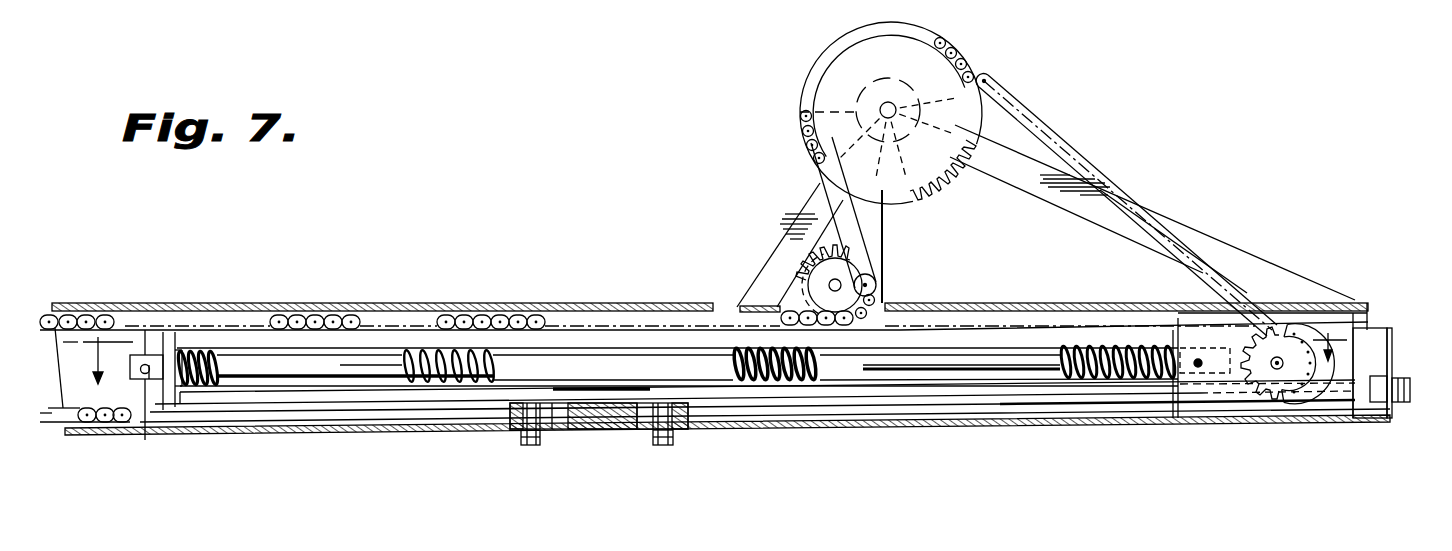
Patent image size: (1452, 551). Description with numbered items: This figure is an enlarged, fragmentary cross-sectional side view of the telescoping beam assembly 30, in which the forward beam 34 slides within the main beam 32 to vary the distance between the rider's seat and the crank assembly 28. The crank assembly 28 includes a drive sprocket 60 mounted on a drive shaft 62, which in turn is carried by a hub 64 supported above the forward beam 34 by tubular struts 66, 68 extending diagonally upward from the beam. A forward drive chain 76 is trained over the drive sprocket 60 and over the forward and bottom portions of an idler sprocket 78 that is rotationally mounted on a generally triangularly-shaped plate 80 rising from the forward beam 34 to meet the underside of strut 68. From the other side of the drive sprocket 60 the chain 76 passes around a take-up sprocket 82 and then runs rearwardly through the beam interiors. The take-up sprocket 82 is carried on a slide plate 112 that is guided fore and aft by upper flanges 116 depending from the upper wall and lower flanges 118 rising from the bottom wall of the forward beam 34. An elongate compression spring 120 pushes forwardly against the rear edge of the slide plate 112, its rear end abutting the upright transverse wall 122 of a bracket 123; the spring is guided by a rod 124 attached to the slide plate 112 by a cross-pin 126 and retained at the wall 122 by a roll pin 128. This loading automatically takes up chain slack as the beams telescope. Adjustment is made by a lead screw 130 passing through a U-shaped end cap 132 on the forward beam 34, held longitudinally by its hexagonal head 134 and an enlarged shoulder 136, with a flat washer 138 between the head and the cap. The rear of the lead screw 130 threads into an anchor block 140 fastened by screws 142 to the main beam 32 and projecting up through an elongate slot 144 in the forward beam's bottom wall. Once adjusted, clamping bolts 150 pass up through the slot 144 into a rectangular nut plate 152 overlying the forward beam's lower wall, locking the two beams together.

The crank assembly 28 is at (1020, 174).
The beam assembly 30 is at (466, 258).
The main beam 32 is at (232, 304).
The forward beam 34 is at (1152, 418).
The drive sprocket 60 is at (910, 53).
The drive shaft 62 is at (884, 105).
The hub 64 is at (800, 124).
The tubular strut 66 is at (1222, 247).
The tubular strut 68 is at (760, 272).
The forward drive chain 76 is at (1047, 120).
The idler sprocket 78 is at (810, 260).
The triangularly-shaped plate 80 is at (820, 186).
The take-up sprocket 82 is at (1277, 380).
The slide plate 112 is at (1177, 312).
The flanges 116 is at (1332, 302).
The lower flanges 118 is at (1223, 415).
The compression spring 120 is at (1075, 375).
The upright transverse wall 122 is at (160, 333).
The bracket 123 is at (145, 332).
The rod 124 is at (878, 372).
The cross-pin 126 is at (1198, 368).
The roll pin 128 is at (145, 440).
The lead screw 130 is at (968, 392).
The end cap 132 is at (1392, 358).
The hexagonal head 134 is at (1403, 404).
The shoulder 136 is at (1372, 420).
The flat washer 138 is at (1392, 382).
The anchor block 140 is at (600, 432).
The screws 142 is at (560, 432).
The slot 144 is at (483, 430).
The clamping bolts 150 is at (535, 447).
The nut plate 152 is at (750, 425).